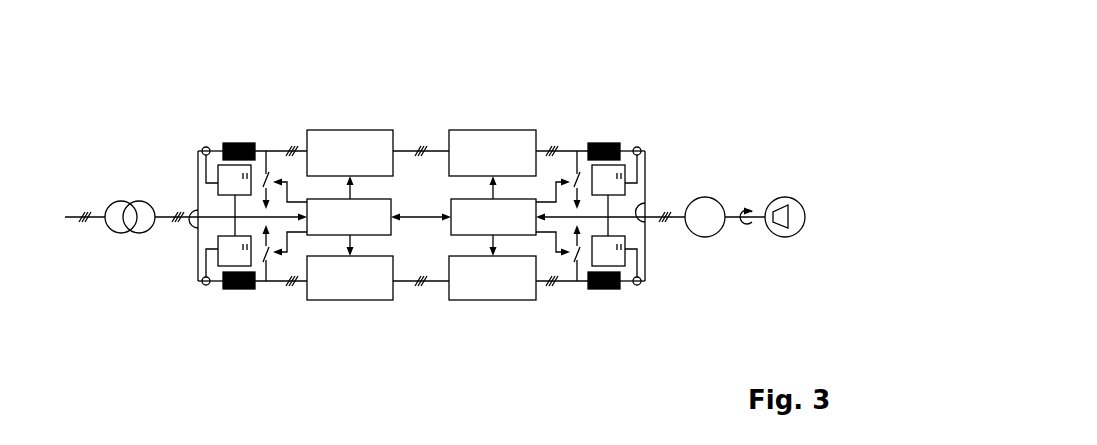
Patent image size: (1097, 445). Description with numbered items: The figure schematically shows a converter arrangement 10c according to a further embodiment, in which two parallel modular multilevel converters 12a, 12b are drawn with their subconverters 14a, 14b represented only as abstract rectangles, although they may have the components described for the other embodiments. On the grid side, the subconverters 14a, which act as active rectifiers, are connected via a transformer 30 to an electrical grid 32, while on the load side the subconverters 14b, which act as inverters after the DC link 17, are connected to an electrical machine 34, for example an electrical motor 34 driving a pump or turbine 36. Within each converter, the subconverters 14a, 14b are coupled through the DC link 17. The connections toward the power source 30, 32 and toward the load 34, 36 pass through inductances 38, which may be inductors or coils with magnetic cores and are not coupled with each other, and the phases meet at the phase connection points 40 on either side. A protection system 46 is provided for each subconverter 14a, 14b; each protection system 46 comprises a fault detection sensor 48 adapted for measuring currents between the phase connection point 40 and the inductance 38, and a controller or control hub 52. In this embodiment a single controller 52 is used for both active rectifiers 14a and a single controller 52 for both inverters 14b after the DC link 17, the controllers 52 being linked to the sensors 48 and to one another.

The converter arrangement 10c is at (417, 220).
The modular multilevel converter 12a is at (183, 128).
The modular multilevel converter 12b is at (188, 329).
The modular multilevel subconverter 14a is at (330, 129).
The modular multilevel subconverter 14b is at (478, 129).
The DC link 17 is at (425, 150).
The transformer 30 is at (115, 235).
The electrical grid 32 is at (68, 222).
The electrical machine 34 is at (705, 238).
The pump or turbine 36 is at (783, 238).
The inductance 38 is at (232, 142).
The phase connection point 40 is at (197, 235).
The protection system 46 is at (187, 96).
The fault detection sensor 48 is at (218, 192).
The controller 52 is at (385, 236).